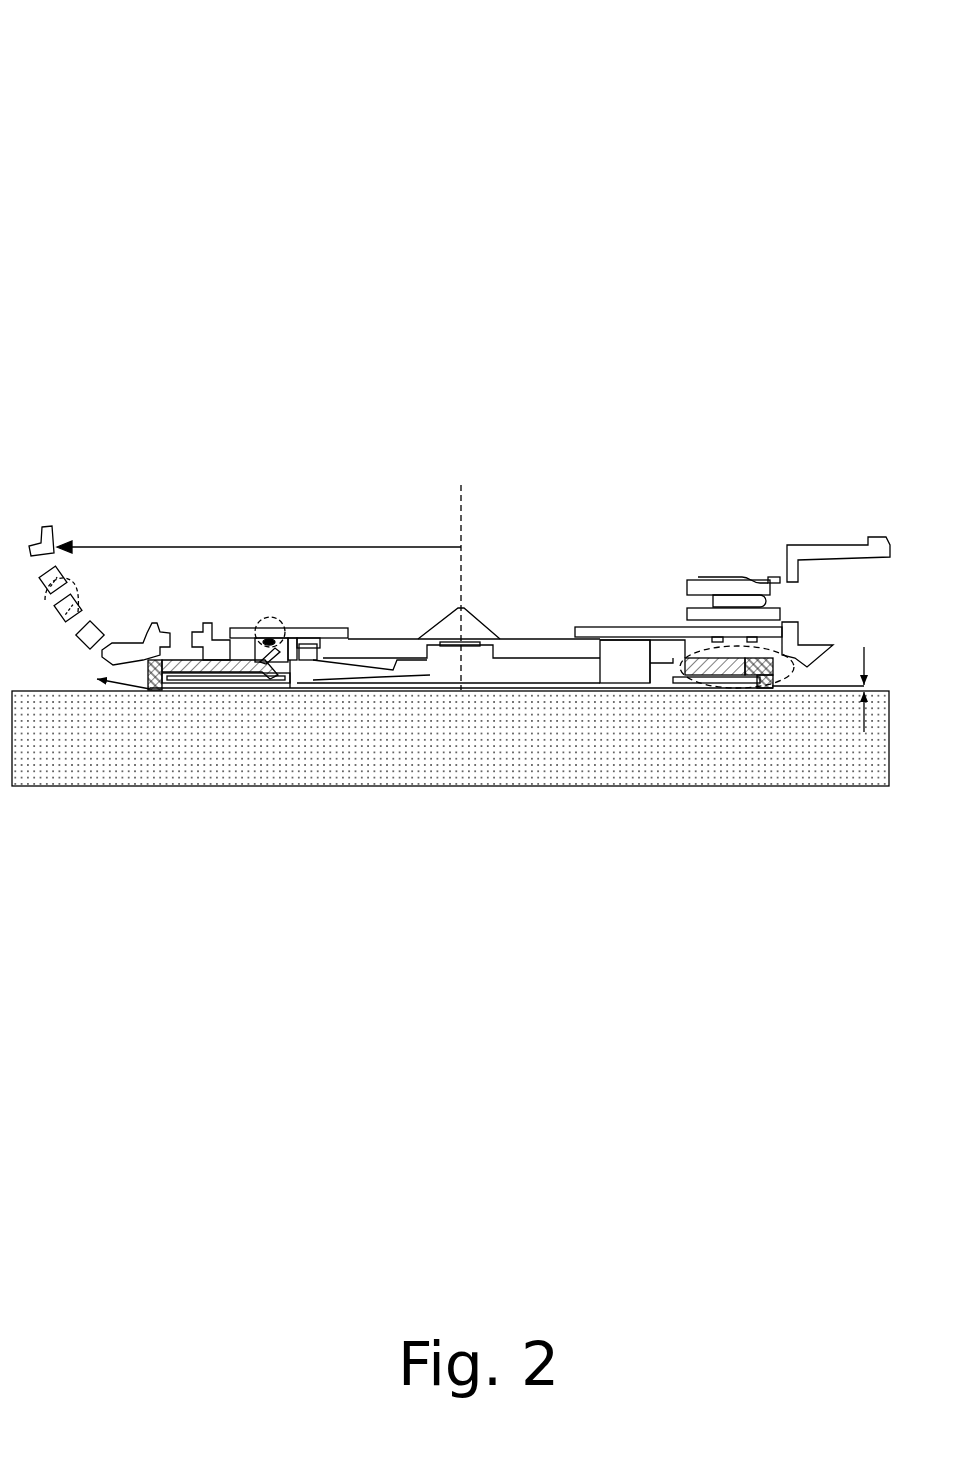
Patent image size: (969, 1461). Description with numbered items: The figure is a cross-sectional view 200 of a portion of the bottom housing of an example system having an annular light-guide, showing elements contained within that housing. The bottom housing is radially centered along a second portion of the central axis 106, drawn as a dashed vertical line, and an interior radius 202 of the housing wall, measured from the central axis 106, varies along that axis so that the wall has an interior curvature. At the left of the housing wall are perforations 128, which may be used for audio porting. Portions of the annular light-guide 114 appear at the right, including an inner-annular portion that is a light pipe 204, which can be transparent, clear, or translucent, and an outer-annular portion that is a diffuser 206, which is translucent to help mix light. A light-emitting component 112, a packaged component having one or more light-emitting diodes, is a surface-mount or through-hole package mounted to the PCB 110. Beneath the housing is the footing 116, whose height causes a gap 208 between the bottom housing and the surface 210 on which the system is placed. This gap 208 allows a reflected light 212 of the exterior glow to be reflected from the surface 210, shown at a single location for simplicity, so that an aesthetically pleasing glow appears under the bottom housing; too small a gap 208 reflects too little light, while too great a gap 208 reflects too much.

The cross-sectional view 200 is at (158, 77).
The central axis 106 is at (462, 510).
The PCB 110 is at (307, 628).
The light-emitting component 112 is at (270, 615).
The annular light-guide 114 is at (703, 648).
The footing 116 is at (575, 688).
The perforations 128 is at (78, 592).
The interior radius 202 is at (220, 547).
The light pipe 204 is at (698, 663).
The diffuser 206 is at (773, 657).
The gap 208 is at (829, 676).
The surface 210 is at (812, 693).
The reflected light 212 is at (125, 683).